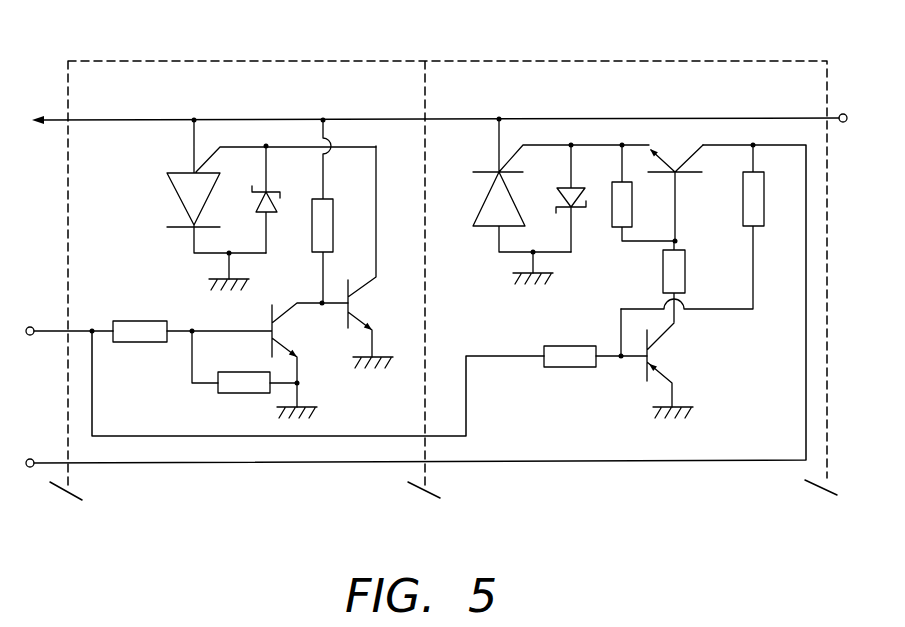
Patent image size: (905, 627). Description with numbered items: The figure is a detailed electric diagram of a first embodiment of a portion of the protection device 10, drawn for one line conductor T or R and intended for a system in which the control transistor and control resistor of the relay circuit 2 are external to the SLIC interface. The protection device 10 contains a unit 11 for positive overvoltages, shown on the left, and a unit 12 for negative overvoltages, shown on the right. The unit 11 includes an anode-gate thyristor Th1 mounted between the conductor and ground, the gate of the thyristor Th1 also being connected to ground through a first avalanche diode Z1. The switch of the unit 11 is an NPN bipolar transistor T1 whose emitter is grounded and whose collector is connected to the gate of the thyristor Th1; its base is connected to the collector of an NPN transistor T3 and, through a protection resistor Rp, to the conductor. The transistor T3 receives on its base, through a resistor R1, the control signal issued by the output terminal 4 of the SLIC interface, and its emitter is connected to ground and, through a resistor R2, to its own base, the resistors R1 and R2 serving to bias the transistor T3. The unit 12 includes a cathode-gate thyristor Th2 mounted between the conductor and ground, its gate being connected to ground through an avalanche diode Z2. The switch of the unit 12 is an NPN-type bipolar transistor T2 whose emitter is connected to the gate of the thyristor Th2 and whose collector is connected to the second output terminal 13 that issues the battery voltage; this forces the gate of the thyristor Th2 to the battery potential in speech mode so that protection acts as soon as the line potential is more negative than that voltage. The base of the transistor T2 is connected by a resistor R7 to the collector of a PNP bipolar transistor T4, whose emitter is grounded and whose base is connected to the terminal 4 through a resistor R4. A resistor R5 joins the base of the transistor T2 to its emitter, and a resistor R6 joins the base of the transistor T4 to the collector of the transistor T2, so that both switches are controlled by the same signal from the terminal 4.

The relay circuit 2 is at (435, 109).
The output terminal of SLIC interface 4 is at (285, 369).
The second output terminal of SLIC interface 13 is at (413, 306).
The protection device 10 is at (828, 245).
The unit for positive overvoltages 11 is at (253, 480).
The unit for negative overvoltages 12 is at (591, 480).
The anode-gate thyristor Th1 is at (256, 204).
The first avalanche diode Z1 is at (250, 199).
The protection resistor Rp is at (338, 212).
The NPN bipolar transistor T1 is at (371, 257).
The NPN transistor T3 is at (270, 360).
The resistor R1 is at (154, 317).
The resistor R2 is at (244, 362).
The cathode-gate thyristor Th2 is at (546, 201).
The avalanche diode Z2 is at (558, 198).
The resistor R5 is at (645, 193).
The NPN-type bipolar transistor T2 is at (675, 186).
The resistor R6 is at (708, 226).
The resistor R7 is at (689, 281).
The resistor R4 is at (595, 338).
The PNP bipolar transistor T4 is at (672, 370).